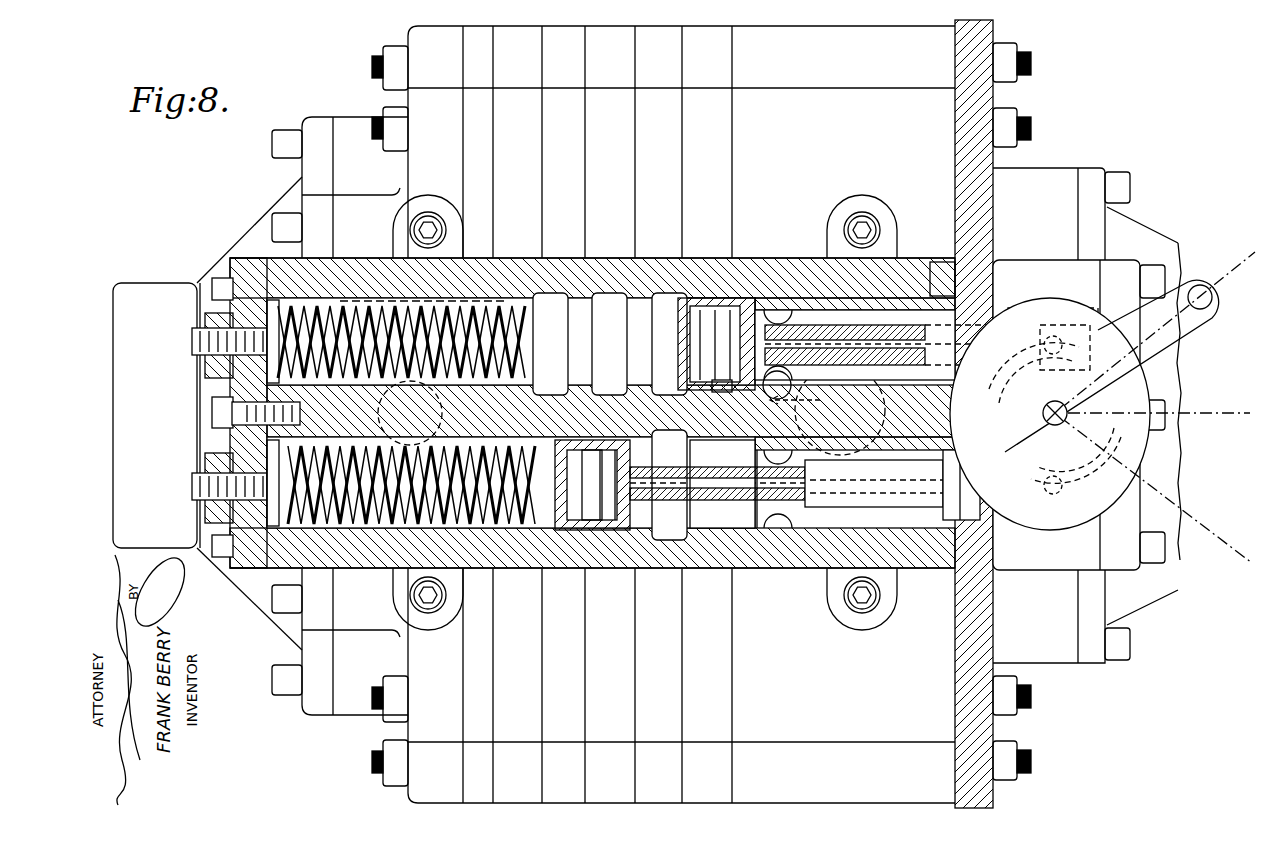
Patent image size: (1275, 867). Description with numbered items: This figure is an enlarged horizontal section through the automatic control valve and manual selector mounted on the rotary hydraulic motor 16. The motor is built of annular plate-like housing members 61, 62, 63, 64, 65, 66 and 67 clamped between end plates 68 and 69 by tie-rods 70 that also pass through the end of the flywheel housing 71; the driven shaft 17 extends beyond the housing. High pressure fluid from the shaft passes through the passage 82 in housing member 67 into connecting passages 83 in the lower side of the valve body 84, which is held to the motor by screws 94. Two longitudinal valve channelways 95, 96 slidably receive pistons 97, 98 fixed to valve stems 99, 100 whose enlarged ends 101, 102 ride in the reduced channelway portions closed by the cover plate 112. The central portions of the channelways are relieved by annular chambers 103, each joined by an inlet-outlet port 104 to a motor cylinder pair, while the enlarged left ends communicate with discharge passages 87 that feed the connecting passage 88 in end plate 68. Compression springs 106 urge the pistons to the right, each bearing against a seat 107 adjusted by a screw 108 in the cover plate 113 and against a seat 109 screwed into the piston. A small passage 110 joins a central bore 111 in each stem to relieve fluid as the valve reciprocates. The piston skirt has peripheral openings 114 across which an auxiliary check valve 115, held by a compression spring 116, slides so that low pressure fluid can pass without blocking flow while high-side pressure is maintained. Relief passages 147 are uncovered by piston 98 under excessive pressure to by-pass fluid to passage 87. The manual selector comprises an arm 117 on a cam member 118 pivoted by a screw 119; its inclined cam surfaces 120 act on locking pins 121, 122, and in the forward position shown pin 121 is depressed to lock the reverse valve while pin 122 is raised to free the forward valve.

The rotary hydraulic motor 16 is at (350, 717).
The driven shaft 17 is at (112, 358).
The housing member 61 is at (478, 740).
The housing member 62 is at (516, 740).
The housing member 63 is at (566, 740).
The housing member 64 is at (613, 740).
The housing member 65 is at (660, 740).
The housing member 66 is at (707, 740).
The housing member 67 is at (830, 732).
The end plate 68 is at (437, 740).
The end plate 69 is at (933, 730).
The tie-rods 70 is at (372, 127).
The flywheel housing 71 is at (985, 196).
The passage 82 is at (878, 410).
The connecting passages 83 is at (795, 298).
The valve body 84 is at (783, 590).
The discharge passages 87 is at (352, 300).
The connecting passage 88 is at (446, 410).
The screws 94 is at (429, 222).
The valve channelway 95 is at (576, 298).
The valve channelway 96 is at (700, 530).
The valve piston 97 is at (748, 385).
The valve piston 98 is at (612, 530).
The valve stem 99 is at (948, 292).
The valve stem 100 is at (820, 530).
The enlarged end 101 is at (1060, 300).
The enlarged end 102 is at (955, 520).
The annular chambers 103 is at (666, 298).
The inlet-outlet ports 104 is at (537, 298).
The compression spring 106 is at (324, 298).
The seat 107 is at (258, 292).
The screw 108 is at (192, 340).
The seat 109 is at (693, 298).
The small passage 110 is at (760, 298).
The central bore 111 is at (870, 330).
The cover plate 112 is at (1130, 560).
The cover plate 113 is at (236, 384).
The peripheral openings 114 is at (722, 392).
The auxiliary check valve 115 is at (712, 298).
The compression spring 116 is at (740, 298).
The arm 117 is at (1210, 310).
The cam member 118 is at (1135, 400).
The screw 119 is at (1044, 416).
The inclined cam surfaces 120 is at (1055, 415).
The locking pin 121 is at (1044, 364).
The locking pin 122 is at (1066, 458).
The relief passages 147 is at (478, 265).